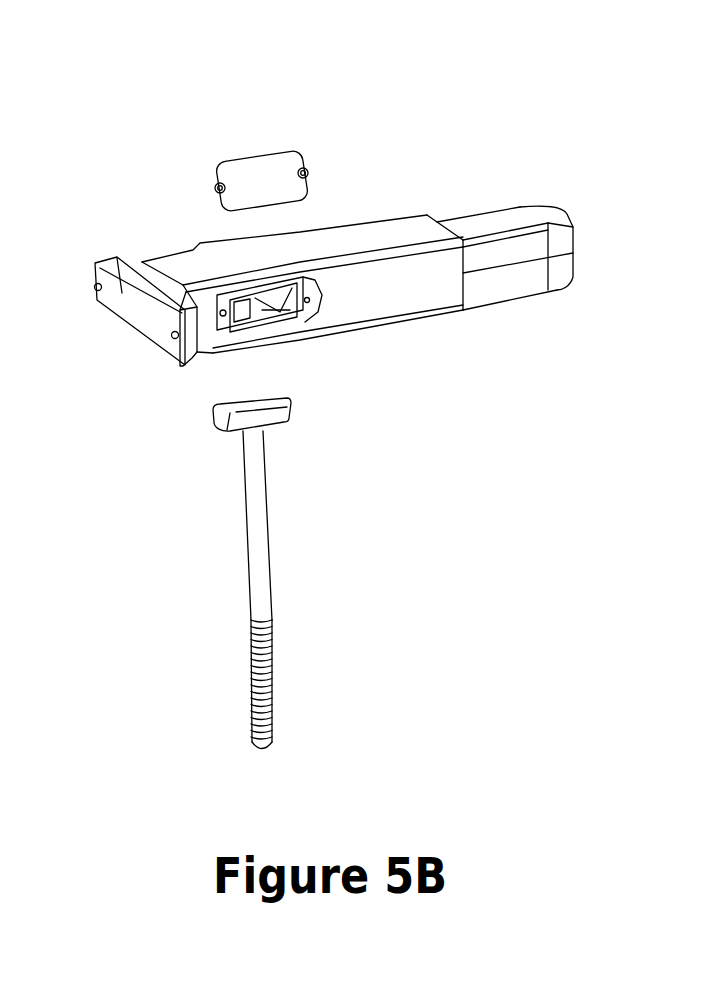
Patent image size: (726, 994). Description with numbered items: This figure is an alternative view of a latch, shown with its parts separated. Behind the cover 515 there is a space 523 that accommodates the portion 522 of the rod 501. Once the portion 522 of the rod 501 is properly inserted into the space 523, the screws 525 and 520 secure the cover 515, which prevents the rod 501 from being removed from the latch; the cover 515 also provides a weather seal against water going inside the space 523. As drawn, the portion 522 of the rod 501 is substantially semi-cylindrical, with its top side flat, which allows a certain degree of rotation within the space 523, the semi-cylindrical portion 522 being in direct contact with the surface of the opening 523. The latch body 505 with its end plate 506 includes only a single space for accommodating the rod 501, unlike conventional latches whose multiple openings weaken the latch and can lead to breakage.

The rod 501 is at (253, 542).
The housing end block 505 is at (573, 230).
The end plate 506 is at (115, 265).
The cover 515 is at (260, 173).
The screw 520 is at (308, 166).
The portion of rod 522 is at (290, 408).
The space 523 is at (315, 320).
The screw 525 is at (214, 182).